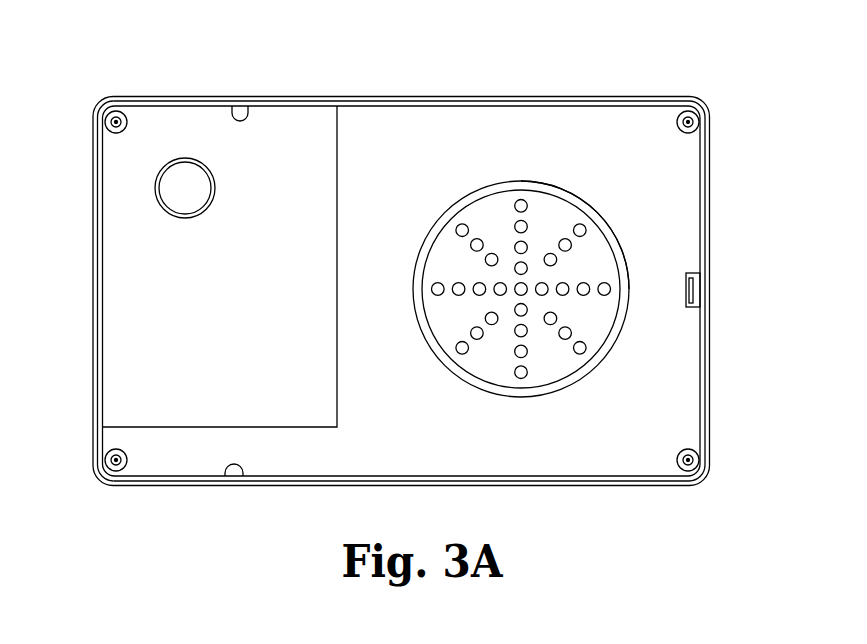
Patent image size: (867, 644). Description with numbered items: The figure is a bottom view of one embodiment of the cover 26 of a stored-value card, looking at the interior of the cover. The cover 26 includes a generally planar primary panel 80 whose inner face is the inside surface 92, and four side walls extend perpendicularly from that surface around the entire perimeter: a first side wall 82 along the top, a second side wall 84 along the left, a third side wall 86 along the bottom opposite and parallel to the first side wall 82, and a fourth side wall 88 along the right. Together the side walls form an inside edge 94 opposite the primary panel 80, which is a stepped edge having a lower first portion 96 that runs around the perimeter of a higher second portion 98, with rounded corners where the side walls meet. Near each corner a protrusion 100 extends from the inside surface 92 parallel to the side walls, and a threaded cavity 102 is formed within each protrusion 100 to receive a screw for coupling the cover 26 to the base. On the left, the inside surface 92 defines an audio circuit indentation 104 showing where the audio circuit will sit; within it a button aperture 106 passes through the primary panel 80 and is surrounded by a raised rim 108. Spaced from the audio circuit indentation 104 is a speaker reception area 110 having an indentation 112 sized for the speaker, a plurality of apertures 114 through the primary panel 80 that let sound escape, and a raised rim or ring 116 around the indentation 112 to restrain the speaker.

The cover 26 is at (643, 62).
The primary panel 80 is at (405, 132).
The first side wall 82 is at (557, 96).
The second side wall 84 is at (100, 300).
The third side wall 86 is at (656, 487).
The fourth side wall 88 is at (703, 287).
The inside surface 92 is at (667, 378).
The inside edge 94 is at (712, 150).
The first portion 96 is at (292, 99).
The second portion 98 is at (232, 97).
The protrusion 100 is at (115, 110).
The threaded cavity 102 is at (96, 104).
The audio circuit indentation 104 is at (133, 401).
The button aperture 106 is at (170, 181).
The raised rim 108 is at (160, 200).
The speaker reception area 110 is at (585, 262).
The indentation 112 is at (600, 316).
The apertures 114 is at (568, 240).
The raised rim or ring 116 is at (608, 340).